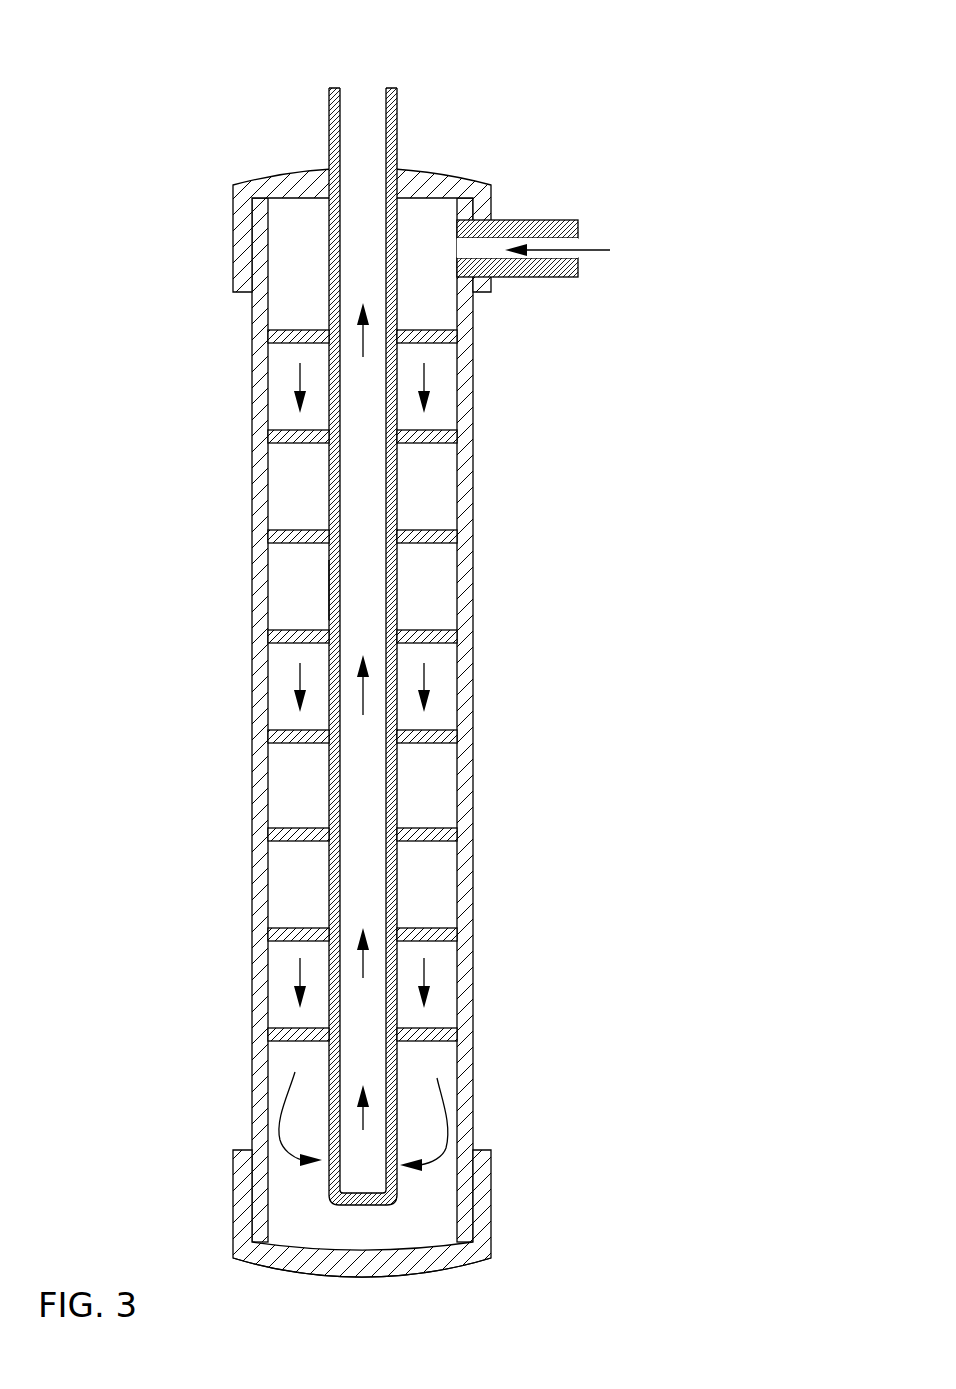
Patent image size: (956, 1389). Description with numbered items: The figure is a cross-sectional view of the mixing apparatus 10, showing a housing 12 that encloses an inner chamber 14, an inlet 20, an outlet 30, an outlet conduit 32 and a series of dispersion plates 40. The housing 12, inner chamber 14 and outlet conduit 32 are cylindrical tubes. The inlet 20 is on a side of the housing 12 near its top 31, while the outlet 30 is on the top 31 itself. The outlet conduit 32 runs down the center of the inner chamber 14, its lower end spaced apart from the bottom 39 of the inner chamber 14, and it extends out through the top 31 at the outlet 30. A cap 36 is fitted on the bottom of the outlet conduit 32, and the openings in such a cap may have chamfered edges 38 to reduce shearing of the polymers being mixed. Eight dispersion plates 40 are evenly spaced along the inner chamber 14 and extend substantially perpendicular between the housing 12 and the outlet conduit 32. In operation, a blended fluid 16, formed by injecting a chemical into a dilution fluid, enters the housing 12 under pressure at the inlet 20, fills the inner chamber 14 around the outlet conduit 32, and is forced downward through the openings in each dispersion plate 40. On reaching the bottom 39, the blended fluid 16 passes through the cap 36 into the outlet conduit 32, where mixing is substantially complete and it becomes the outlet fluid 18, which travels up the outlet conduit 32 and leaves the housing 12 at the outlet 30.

The mixing apparatus 10 is at (110, 78).
The housing 12 is at (238, 765).
The inner chamber 14 is at (272, 248).
The blended fluid 16 is at (588, 251).
The outlet fluid 18 is at (363, 103).
The inlet 20 is at (538, 220).
The outlet 30 is at (398, 120).
The top 31 is at (288, 180).
The outlet conduit 32 is at (316, 582).
The cap 36 is at (410, 1210).
The chamfered edges 38 is at (397, 1117).
The bottom 39 is at (358, 1277).
The dispersion plates 40 is at (292, 445).